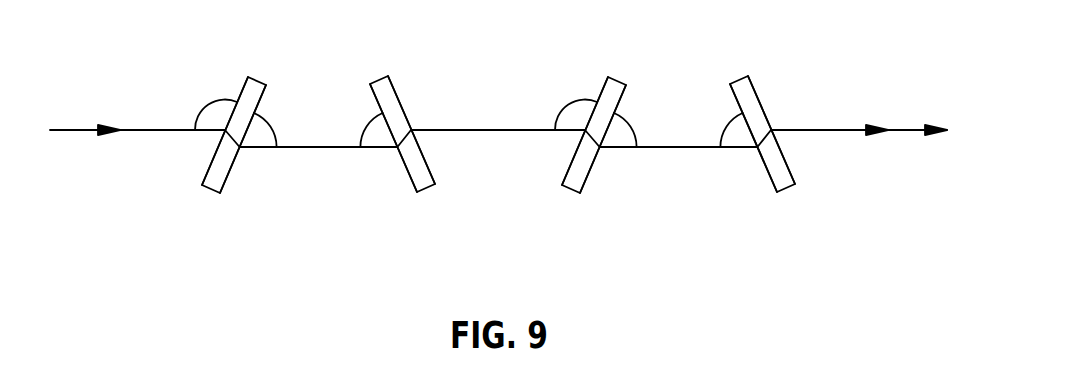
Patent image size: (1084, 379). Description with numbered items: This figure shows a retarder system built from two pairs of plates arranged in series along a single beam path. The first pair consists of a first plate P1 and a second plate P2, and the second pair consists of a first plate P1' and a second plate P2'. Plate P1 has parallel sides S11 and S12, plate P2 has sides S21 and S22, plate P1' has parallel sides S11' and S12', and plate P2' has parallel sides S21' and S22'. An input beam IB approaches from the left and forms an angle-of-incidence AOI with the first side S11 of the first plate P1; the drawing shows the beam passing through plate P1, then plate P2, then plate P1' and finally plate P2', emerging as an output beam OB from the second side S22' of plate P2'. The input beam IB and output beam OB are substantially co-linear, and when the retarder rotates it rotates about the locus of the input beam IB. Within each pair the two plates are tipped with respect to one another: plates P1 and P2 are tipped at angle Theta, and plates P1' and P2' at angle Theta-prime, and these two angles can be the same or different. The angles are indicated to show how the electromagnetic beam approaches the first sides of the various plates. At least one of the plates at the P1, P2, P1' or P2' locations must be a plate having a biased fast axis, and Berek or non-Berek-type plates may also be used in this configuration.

The Input Beam IB is at (134, 115).
The Output Beam OB is at (864, 115).
The first Plate P1 is at (220, 101).
The second Plate P2 is at (414, 101).
The first Plate of second pair P1' is at (581, 101).
The second Plate of second pair P2' is at (778, 101).
The first side of first Plate S11 is at (153, 140).
The second side of first Plate S12 is at (254, 172).
The first side of second Plate S21 is at (378, 173).
The second side of second Plate S22 is at (434, 171).
The first side of Plate P1' S11' is at (556, 180).
The second side of Plate P1' S12' is at (617, 175).
The first side of Plate P2' S21' is at (739, 174).
The second side of Plate P2' S22' is at (845, 140).
The Angle-of-Incidence AOI is at (376, 104).